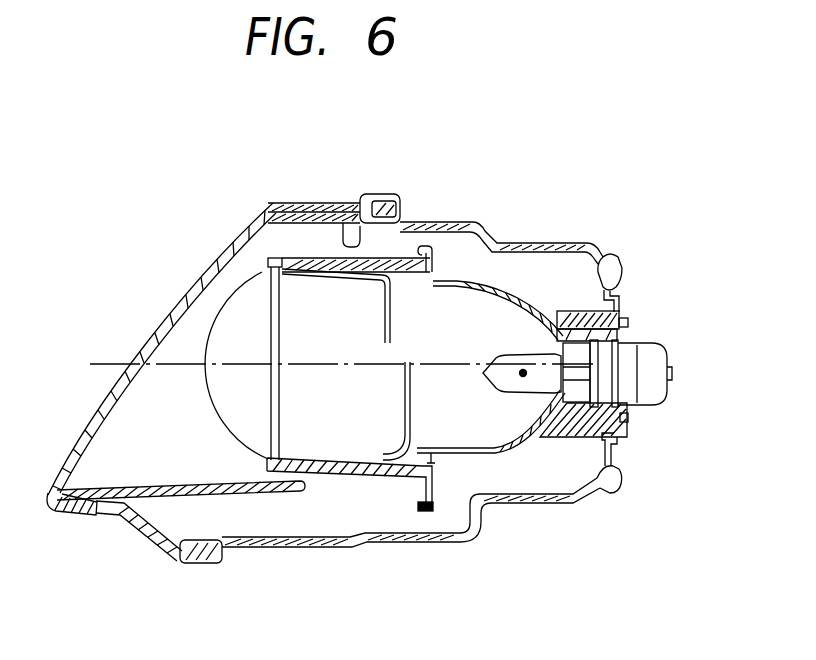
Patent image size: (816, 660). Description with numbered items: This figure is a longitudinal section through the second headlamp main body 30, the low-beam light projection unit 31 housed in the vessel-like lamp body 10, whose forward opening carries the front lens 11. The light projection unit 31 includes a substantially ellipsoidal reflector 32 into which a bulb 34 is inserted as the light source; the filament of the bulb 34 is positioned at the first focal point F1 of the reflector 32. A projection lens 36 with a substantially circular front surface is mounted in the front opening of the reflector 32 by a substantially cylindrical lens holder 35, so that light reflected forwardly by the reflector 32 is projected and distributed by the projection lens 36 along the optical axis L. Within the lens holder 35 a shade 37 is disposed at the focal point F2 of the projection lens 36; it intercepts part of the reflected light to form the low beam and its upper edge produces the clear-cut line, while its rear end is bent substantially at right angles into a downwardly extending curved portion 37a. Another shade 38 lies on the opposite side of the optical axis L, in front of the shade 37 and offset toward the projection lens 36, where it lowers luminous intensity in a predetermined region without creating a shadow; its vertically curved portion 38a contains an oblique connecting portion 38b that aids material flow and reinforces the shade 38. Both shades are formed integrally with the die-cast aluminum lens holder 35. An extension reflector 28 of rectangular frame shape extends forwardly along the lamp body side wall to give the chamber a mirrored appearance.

The lamp body 10 is at (548, 247).
The front lens 11 is at (212, 256).
The extension reflector 28 is at (144, 497).
The second headlamp main body 30 is at (200, 394).
The light projection unit 31 is at (492, 143).
The reflector 32 is at (482, 238).
The bulb 34 is at (478, 290).
The lens holder 35 is at (357, 198).
The projection lens 36 is at (242, 300).
The shade 37 is at (402, 428).
The curved portion 37a is at (405, 450).
The shade 38 is at (391, 332).
The curved portion 38a is at (398, 280).
The connecting portion 38b is at (360, 284).
The optical axis L is at (104, 362).
The first focal point F1 is at (523, 370).
The focal point F2 is at (378, 366).